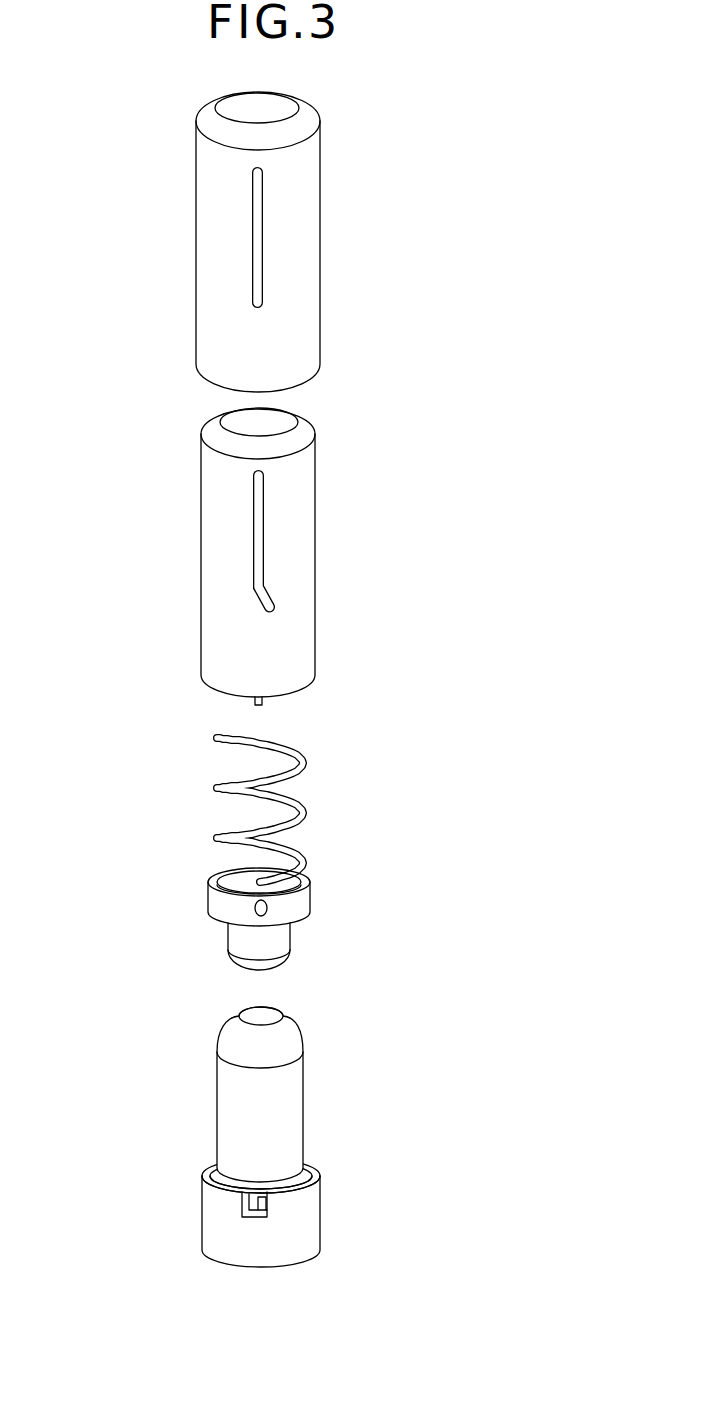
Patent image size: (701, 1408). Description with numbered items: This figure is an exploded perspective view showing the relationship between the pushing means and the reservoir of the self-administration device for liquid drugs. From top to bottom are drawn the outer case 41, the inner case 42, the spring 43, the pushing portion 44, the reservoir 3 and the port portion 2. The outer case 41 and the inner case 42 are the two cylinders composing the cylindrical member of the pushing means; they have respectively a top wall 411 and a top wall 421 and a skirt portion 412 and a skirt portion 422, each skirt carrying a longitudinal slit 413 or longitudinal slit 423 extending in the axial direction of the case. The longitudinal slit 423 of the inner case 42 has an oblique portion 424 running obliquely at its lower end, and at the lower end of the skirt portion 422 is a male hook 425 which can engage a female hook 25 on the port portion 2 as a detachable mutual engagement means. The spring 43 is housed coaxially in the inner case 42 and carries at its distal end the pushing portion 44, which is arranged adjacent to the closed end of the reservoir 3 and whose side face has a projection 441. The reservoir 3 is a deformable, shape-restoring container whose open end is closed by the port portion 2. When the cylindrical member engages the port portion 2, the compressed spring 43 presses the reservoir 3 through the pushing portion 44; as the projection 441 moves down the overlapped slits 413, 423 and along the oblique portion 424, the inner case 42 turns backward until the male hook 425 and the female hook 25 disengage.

The port portion 2 is at (266, 1137).
The female hook 25 is at (268, 1210).
The reservoir 3 is at (216, 1095).
The outer case 41 is at (245, 226).
The top wall 411 is at (308, 103).
The skirt portion 412 is at (196, 243).
The longitudinal slit 413 is at (262, 222).
The inner case 42 is at (248, 549).
The top wall 421 is at (308, 423).
The skirt portion 422 is at (200, 575).
The longitudinal slit 423 is at (331, 543).
The oblique portion 424 is at (276, 598).
The male hook 425 is at (262, 704).
The spring 43 is at (218, 790).
The pushing portion 44 is at (274, 919).
The projection 441 is at (268, 908).